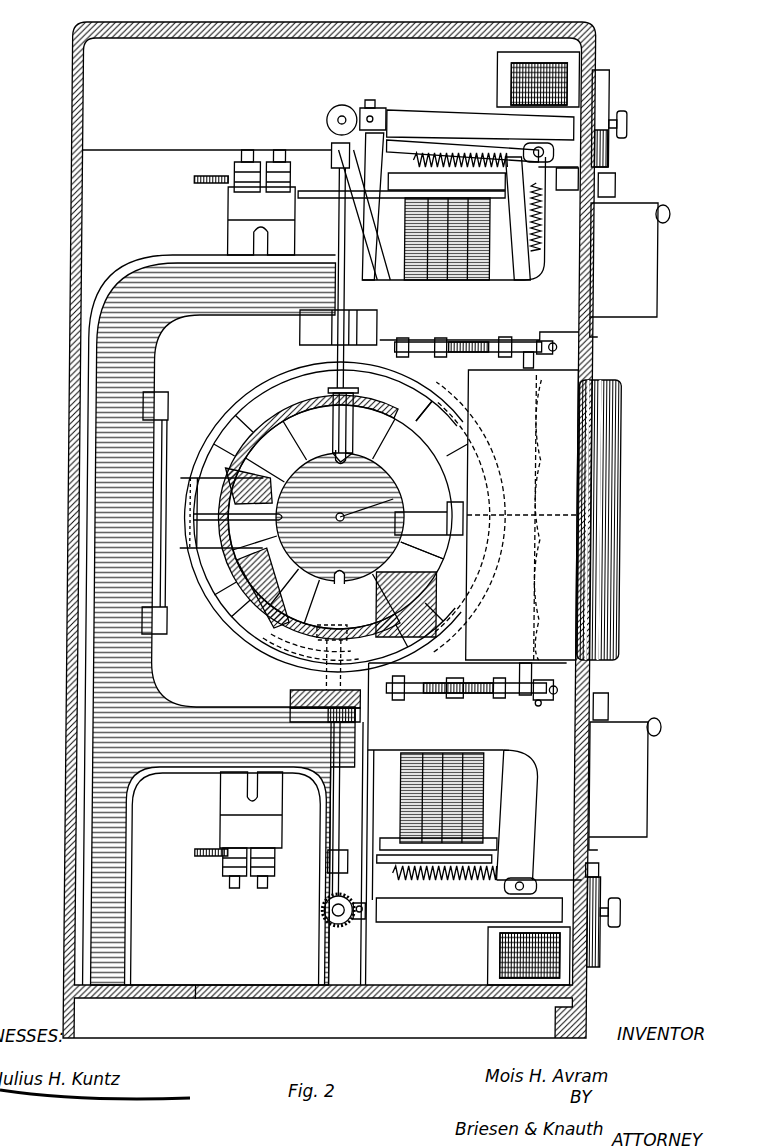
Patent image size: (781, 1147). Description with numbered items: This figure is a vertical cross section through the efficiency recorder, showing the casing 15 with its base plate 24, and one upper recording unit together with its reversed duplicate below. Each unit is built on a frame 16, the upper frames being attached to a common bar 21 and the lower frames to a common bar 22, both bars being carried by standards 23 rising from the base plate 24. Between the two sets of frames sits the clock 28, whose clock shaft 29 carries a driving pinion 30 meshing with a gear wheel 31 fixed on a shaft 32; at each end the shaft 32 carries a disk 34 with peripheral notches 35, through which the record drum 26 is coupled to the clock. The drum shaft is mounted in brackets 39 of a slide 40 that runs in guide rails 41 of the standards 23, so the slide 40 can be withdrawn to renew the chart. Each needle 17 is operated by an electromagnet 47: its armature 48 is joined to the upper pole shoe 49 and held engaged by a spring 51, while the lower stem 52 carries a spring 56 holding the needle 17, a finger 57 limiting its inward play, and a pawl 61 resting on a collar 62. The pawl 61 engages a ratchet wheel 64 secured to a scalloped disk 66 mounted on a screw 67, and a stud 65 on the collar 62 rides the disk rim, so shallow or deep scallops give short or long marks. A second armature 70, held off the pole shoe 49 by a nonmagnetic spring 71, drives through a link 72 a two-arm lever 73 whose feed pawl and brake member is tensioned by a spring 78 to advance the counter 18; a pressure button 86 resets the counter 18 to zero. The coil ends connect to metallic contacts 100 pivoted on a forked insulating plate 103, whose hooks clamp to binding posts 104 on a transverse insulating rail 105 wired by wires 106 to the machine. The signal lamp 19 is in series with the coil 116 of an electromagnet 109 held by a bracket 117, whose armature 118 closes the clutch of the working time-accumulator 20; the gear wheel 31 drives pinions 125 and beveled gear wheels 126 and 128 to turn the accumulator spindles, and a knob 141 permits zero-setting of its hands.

The casing 15 is at (73, 491).
The frame 16 is at (473, 518).
The recording needle 17 is at (525, 470).
The counter 18 is at (621, 526).
The signal lamp 19 is at (672, 214).
The working time-accumulator 20 is at (611, 93).
The common bar 21 is at (303, 336).
The common bar 22 is at (297, 694).
The standard 23 is at (106, 550).
The base plate 24 is at (207, 990).
The drum 26 is at (246, 622).
The clock 28 is at (523, 515).
The clock shaft 29 is at (501, 576).
The driving pinion 30 is at (355, 517).
The gear wheel 31 is at (415, 404).
The shaft 32 is at (400, 498).
The disk 34 is at (415, 502).
The peripheral notch 35 is at (338, 596).
The bracket 39 is at (256, 530).
The slide 40 is at (170, 445).
The guide rail 41 is at (170, 398).
The electromagnet 47 is at (452, 272).
The armature 48 is at (522, 232).
The upper pole shoe 49 is at (441, 523).
The spring 51 is at (460, 158).
The stem 52 is at (540, 365).
The spring 56 is at (540, 452).
The finger 57 is at (530, 655).
The pawl 61 is at (512, 340).
The collar 62 is at (562, 345).
The ratchet wheel 64 is at (468, 522).
The stud 65 is at (474, 357).
The disk 66 is at (470, 683).
The screw 67 is at (455, 680).
The armature 70 is at (395, 135).
The nonmagnetic spring 71 is at (401, 185).
The link 72 is at (423, 143).
The two-arm lever 73 is at (610, 158).
The spring 78 is at (540, 228).
The pressure button 86 is at (618, 182).
The metallic contact 100 is at (300, 196).
The forked insulating plate 103 is at (425, 245).
The binding post 104 is at (240, 890).
The transverse insulating rail 105 is at (230, 210).
The wire 106 is at (196, 186).
The electromagnet 109 is at (565, 70).
The coil 116 is at (540, 65).
The bracket 117 is at (572, 55).
The armature 118 is at (500, 94).
The pinion 125 is at (315, 652).
The beveled gear wheel 126 is at (350, 106).
The beveled gear wheel 128 is at (374, 108).
The knob 141 is at (629, 126).